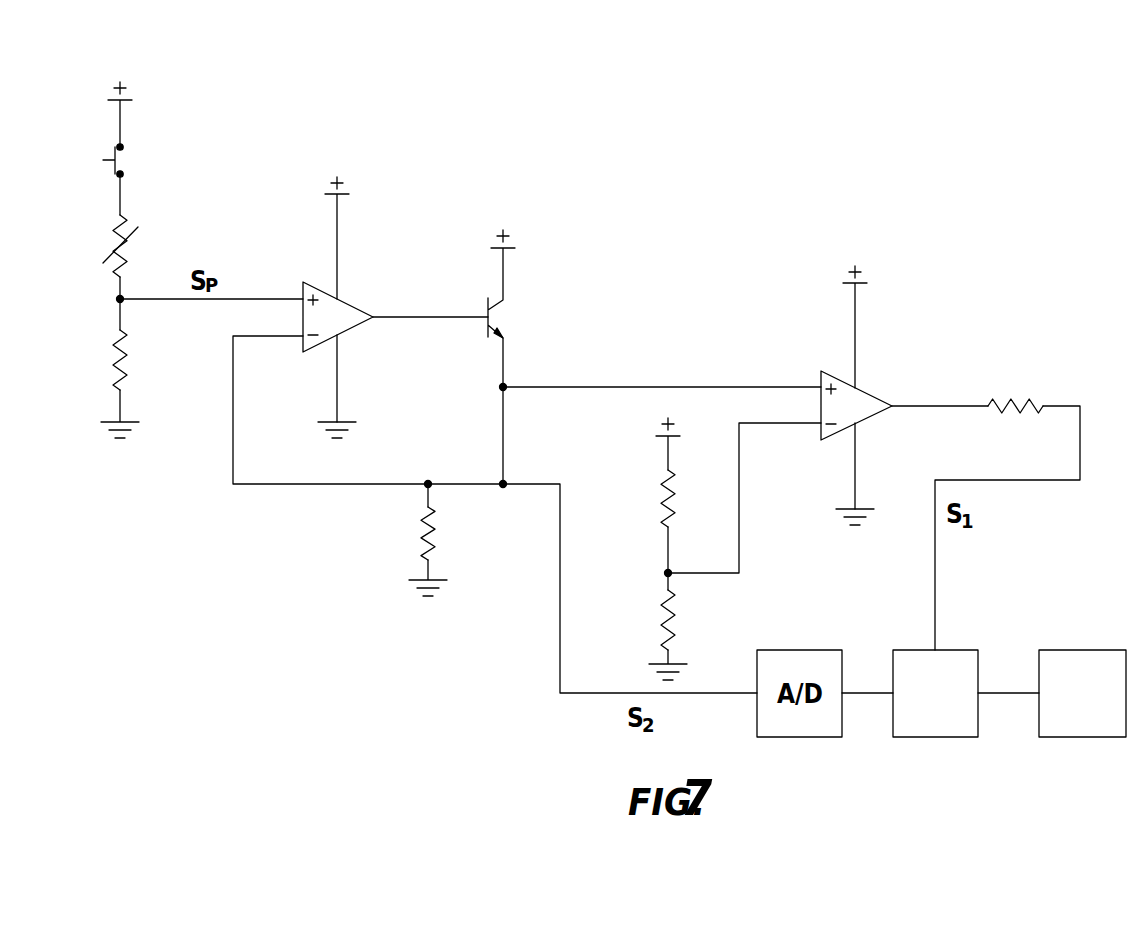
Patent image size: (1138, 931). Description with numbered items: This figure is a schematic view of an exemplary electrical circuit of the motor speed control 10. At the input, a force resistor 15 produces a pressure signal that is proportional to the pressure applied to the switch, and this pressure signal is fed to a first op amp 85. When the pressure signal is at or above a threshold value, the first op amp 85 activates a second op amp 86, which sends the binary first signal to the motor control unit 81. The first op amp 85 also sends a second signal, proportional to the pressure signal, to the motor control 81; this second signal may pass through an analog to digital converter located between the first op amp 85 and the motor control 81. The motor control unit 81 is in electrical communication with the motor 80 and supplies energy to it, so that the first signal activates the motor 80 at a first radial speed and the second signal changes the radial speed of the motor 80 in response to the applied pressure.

The motor speed control 10 is at (903, 196).
The force resistor 15 is at (113, 273).
The first op amp 85 is at (348, 302).
The second op amp 86 is at (867, 385).
The motor control unit 81 is at (935, 693).
The motor 80 is at (1082, 693).